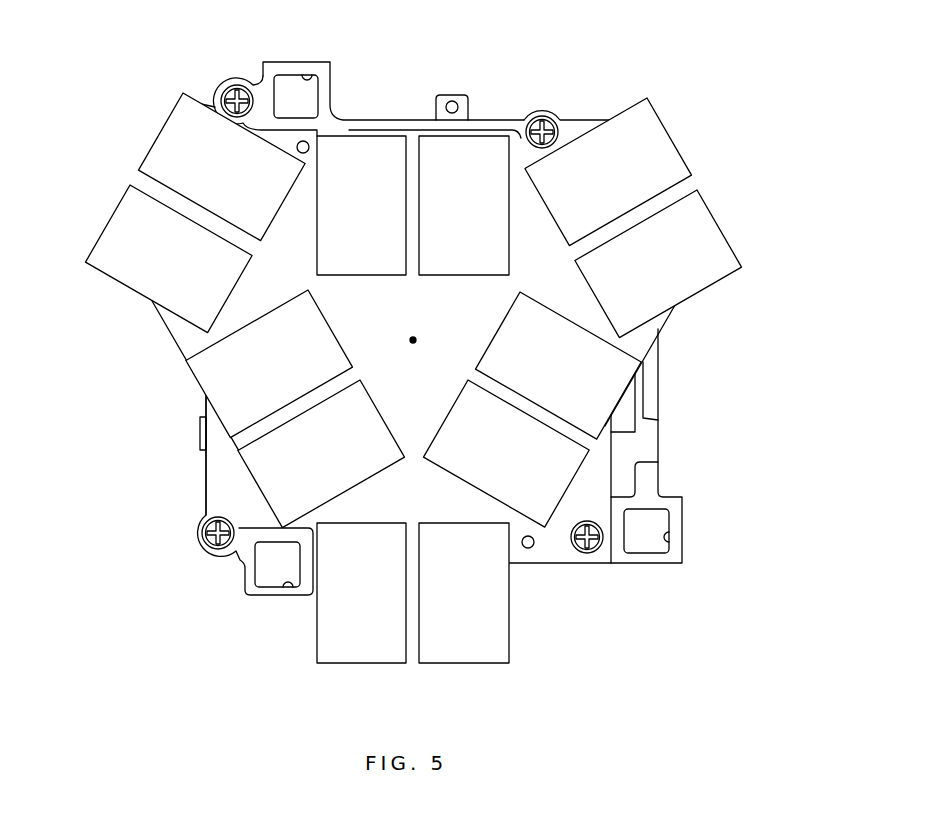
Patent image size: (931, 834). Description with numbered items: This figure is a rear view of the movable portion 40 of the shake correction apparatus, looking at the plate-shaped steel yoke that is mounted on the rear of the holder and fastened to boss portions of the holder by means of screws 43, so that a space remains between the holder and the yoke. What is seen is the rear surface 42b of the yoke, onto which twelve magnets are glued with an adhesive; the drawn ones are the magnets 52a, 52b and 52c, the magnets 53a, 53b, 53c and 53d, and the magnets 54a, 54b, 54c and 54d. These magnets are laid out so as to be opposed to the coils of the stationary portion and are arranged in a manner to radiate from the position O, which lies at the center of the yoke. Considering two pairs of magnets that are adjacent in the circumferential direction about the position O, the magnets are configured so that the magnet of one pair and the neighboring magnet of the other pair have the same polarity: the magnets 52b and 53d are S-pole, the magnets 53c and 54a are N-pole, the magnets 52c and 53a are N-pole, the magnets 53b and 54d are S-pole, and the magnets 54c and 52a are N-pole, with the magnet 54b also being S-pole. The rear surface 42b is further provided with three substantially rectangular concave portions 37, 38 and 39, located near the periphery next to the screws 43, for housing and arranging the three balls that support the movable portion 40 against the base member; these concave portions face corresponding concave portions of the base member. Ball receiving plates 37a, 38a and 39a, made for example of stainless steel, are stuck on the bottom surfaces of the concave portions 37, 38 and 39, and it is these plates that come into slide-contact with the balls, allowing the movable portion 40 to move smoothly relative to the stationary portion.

The movable portion 40 is at (610, 73).
The concave portion 37 is at (309, 78).
The ball receiving plate 37a is at (288, 82).
The concave portion 38 is at (292, 582).
The ball receiving plate 38a is at (265, 580).
The concave portion 39 is at (672, 540).
The ball receiving plate 39a is at (653, 548).
The rear surface 42b is at (205, 458).
The screw 43 is at (237, 84).
The magnet 52a is at (367, 146).
The magnet 52b is at (485, 147).
The magnet 52c is at (372, 647).
The magnet 53a is at (272, 482).
The magnet 53b is at (205, 373).
The magnet 53c is at (712, 237).
The magnet 53d is at (655, 143).
The magnet 54a is at (620, 372).
The magnet 54b is at (543, 498).
The magnet 54c is at (172, 138).
The magnet 54d is at (118, 227).
The position O is at (420, 340).